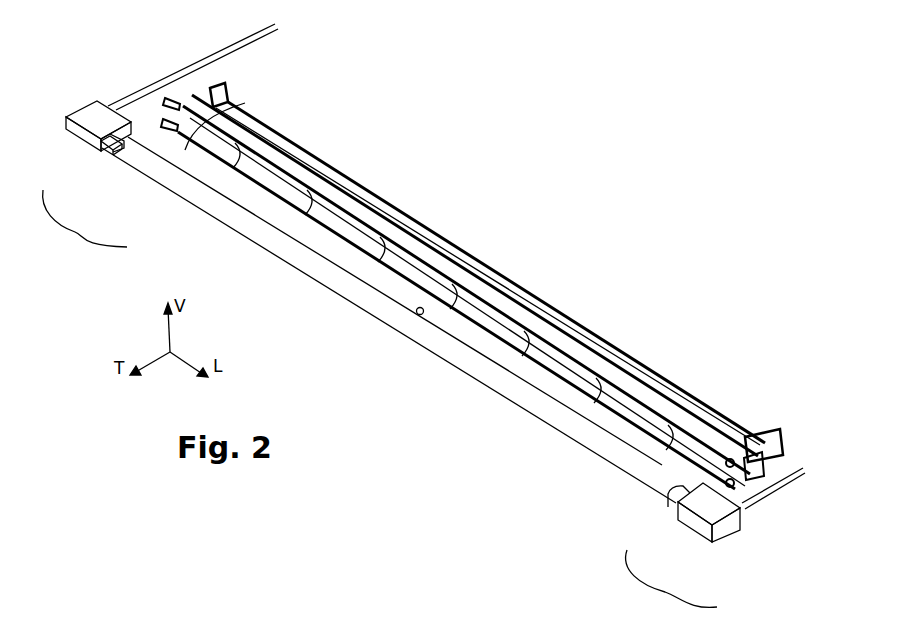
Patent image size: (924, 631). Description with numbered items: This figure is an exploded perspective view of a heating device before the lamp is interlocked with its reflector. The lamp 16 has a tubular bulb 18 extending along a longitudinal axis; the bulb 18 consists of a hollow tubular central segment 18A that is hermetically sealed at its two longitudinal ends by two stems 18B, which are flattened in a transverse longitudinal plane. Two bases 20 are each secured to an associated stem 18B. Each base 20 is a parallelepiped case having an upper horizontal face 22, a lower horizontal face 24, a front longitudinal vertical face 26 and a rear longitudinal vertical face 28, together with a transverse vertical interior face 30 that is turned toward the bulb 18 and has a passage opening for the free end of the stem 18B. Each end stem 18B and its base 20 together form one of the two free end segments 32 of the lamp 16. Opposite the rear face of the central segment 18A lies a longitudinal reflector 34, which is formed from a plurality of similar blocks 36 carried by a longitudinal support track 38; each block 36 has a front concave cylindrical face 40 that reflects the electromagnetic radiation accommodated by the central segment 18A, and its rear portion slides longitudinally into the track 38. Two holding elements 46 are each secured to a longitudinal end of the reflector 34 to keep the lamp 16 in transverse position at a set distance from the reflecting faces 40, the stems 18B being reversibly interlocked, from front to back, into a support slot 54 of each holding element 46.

The lamp 16 is at (368, 334).
The tubular bulb 18 is at (440, 352).
The hollow tubular central segment 18A is at (315, 268).
The stem 18B is at (112, 153).
The base 20 is at (395, 314).
The upper horizontal face 22 is at (100, 113).
The lower horizontal face 24 is at (87, 153).
The front longitudinal vertical face 26 is at (78, 133).
The rear longitudinal vertical face 28 is at (120, 110).
The transverse vertical interior face 30 is at (124, 140).
The free end segment 32 is at (380, 404).
The longitudinal reflector 34 is at (472, 253).
The block 36 is at (418, 267).
The longitudinal support track 38 is at (673, 383).
The front concave cylindrical face 40 is at (445, 288).
The holding element 46 is at (173, 90).
The support slot 54 is at (243, 106).